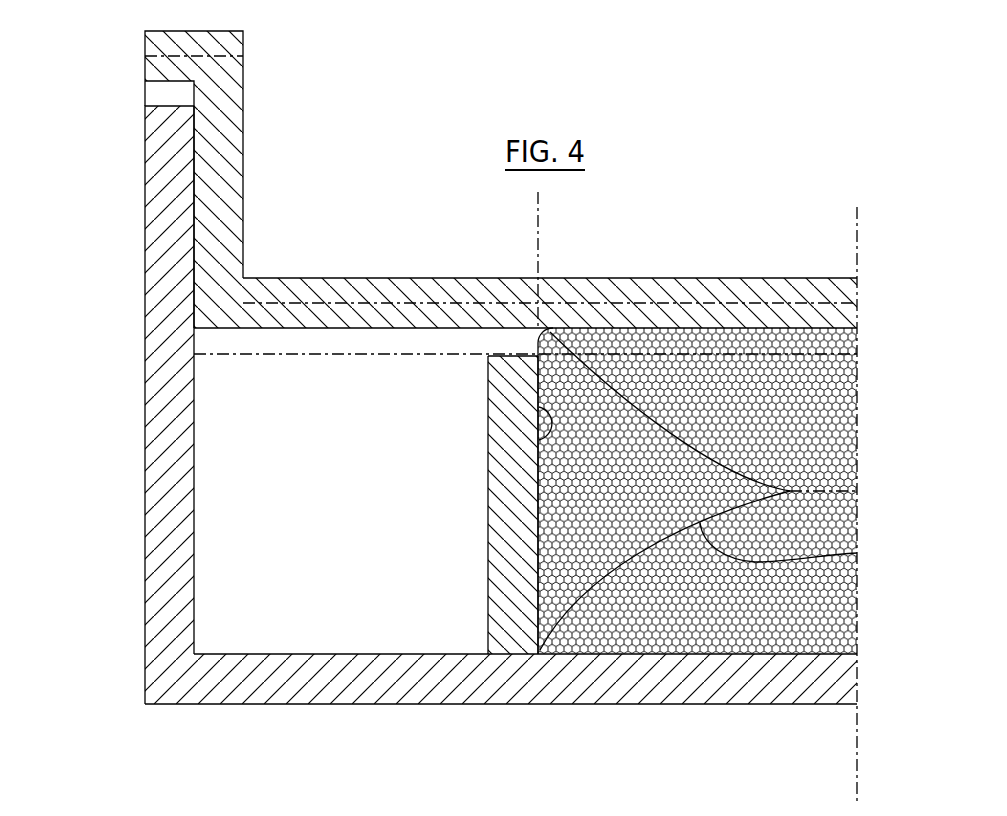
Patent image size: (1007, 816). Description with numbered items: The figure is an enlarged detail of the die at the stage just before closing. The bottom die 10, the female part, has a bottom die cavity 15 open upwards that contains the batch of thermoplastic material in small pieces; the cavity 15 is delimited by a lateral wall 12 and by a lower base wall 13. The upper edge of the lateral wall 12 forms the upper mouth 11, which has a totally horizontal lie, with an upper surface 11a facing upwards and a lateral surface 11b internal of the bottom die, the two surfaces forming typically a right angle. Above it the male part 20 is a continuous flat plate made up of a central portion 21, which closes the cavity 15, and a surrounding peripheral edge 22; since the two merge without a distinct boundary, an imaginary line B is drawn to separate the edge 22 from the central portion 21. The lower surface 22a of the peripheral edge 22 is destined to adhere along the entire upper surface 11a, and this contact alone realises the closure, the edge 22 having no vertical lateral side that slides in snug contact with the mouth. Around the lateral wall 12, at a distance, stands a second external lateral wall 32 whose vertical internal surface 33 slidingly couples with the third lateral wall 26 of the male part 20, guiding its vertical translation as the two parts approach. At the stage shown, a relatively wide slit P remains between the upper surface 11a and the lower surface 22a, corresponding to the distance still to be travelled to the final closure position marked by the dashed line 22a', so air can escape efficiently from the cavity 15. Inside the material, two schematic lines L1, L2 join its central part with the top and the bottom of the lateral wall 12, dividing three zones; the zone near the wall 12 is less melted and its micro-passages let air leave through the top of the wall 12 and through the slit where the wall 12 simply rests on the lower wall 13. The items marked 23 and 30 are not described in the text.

The bottom die 10 is at (487, 461).
The upper mouth 11 is at (509, 343).
The upper surface 11a is at (490, 355).
The lateral surface 11b is at (545, 443).
The lateral wall 12 is at (474, 424).
The lower base wall 13 is at (820, 683).
The bottom die cavity 15 is at (668, 466).
The male part 20 is at (560, 429).
The central portion 21 is at (818, 285).
The peripheral edge 22 is at (383, 292).
The lower surface 22a is at (525, 391).
The dashed line 22a' is at (255, 417).
The filler region 23 is at (551, 553).
The third lateral wall 26 is at (280, 179).
The wall assembly 30 is at (485, 461).
The second external lateral wall 32 is at (160, 322).
The vertical internal surface 33 is at (195, 205).
The slit P is at (485, 324).
The imaginary line B is at (540, 240).
The first line L1 is at (747, 472).
The second line L2 is at (857, 553).